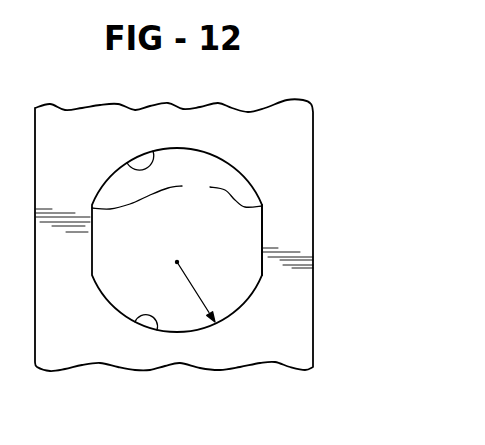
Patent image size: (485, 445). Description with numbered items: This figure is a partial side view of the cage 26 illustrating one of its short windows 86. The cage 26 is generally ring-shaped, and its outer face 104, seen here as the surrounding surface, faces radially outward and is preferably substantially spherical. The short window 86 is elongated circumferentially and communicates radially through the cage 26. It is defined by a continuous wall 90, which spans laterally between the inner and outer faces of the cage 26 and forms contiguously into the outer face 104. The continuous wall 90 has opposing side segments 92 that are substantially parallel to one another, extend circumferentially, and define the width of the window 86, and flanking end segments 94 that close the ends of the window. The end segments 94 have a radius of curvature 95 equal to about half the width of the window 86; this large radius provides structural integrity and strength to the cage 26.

The cage 26 is at (195, 191).
The outer face 104 is at (291, 152).
The short window 86 is at (157, 278).
The continuous wall 90 is at (258, 263).
The side segments 92 is at (130, 165).
The end segments 94 is at (177, 194).
The radius of curvature 95 is at (201, 294).